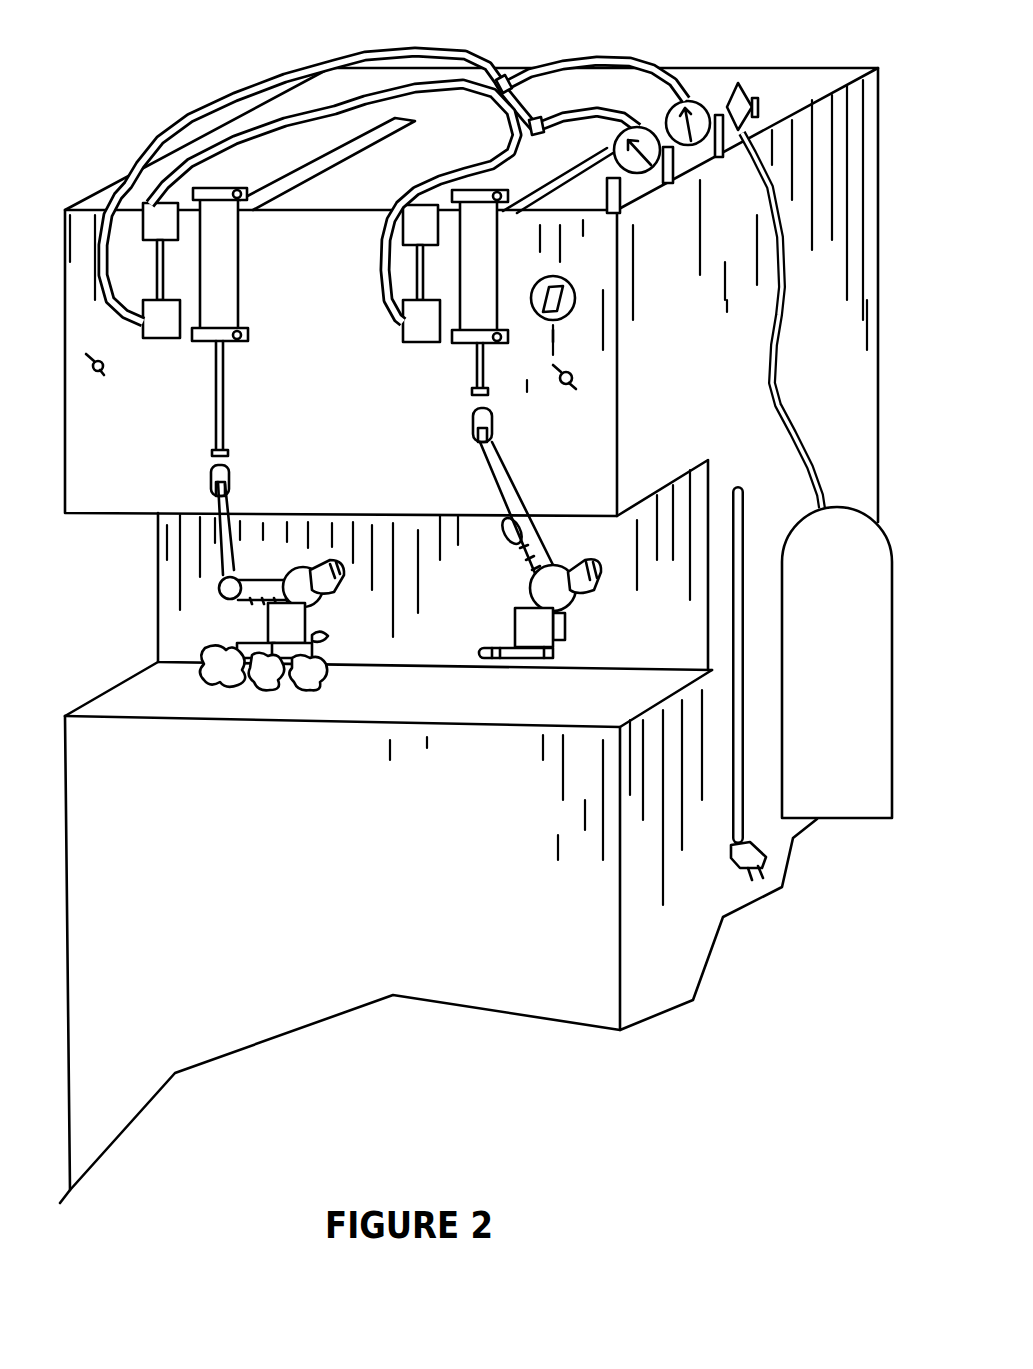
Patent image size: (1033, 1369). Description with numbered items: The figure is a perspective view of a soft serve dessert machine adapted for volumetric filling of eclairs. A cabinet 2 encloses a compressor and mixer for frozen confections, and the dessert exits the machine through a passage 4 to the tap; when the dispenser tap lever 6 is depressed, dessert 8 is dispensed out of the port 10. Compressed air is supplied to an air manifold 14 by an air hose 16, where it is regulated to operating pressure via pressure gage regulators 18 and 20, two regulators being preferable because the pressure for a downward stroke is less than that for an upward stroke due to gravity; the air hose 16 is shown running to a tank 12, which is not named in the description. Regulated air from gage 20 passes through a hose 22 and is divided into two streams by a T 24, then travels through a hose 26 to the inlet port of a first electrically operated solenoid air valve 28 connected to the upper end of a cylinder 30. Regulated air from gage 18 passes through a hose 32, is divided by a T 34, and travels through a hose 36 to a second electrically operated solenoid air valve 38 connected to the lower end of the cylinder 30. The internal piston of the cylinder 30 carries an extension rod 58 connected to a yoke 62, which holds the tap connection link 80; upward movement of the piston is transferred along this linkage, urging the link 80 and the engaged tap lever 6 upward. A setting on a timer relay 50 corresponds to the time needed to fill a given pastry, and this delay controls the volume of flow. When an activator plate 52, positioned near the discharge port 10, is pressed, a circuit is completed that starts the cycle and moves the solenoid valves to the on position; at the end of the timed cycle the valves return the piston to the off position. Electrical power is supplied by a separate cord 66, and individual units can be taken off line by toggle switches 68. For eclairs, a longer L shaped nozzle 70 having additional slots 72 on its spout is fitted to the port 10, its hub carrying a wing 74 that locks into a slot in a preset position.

The cabinet 2 is at (720, 75).
The passage 4 is at (593, 577).
The dispenser tap lever 6 is at (490, 437).
The dessert 8 is at (223, 672).
The port 10 is at (343, 163).
The gas tank 12 is at (838, 517).
The air manifold 14 is at (757, 108).
The air hose 16 is at (777, 385).
The pressure gage regulator 18 is at (647, 183).
The pressure gage regulator 20 is at (468, 158).
The hose 22 is at (567, 58).
The T 24 is at (498, 80).
The hose 26 is at (257, 93).
The first electrically operated solenoid air valve 28 is at (155, 228).
The cylinder 30 is at (227, 267).
The hose 32 is at (593, 115).
The T 34 is at (536, 130).
The hose 36 is at (320, 117).
The second electrically operated solenoid air valve 38 is at (162, 333).
The timer relay 50 is at (570, 293).
The activator plate 52 is at (268, 622).
The extension rod 58 is at (213, 410).
The yoke 62 is at (470, 420).
The cord 66 is at (737, 580).
The toggle switch 68 is at (572, 387).
The L shaped nozzle 70 is at (315, 658).
The slots 72 is at (551, 660).
The wing 74 is at (325, 638).
The tap connection link 80 is at (232, 522).